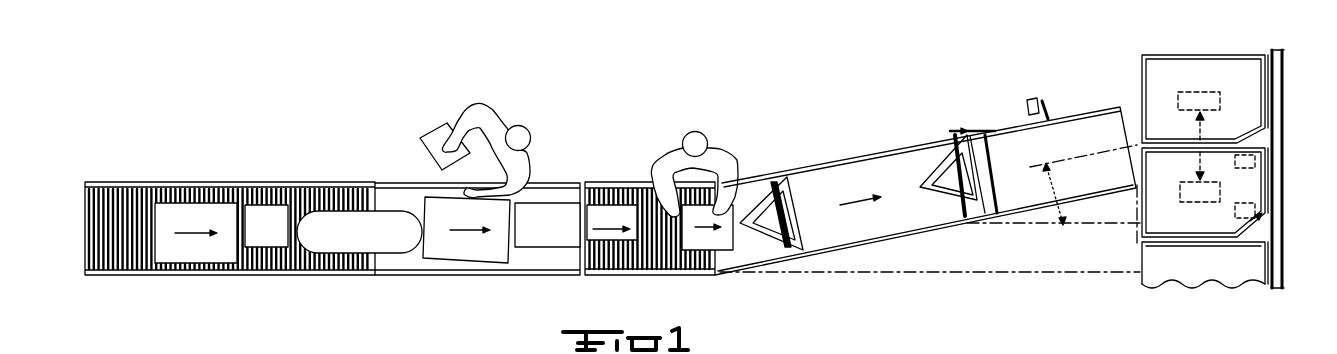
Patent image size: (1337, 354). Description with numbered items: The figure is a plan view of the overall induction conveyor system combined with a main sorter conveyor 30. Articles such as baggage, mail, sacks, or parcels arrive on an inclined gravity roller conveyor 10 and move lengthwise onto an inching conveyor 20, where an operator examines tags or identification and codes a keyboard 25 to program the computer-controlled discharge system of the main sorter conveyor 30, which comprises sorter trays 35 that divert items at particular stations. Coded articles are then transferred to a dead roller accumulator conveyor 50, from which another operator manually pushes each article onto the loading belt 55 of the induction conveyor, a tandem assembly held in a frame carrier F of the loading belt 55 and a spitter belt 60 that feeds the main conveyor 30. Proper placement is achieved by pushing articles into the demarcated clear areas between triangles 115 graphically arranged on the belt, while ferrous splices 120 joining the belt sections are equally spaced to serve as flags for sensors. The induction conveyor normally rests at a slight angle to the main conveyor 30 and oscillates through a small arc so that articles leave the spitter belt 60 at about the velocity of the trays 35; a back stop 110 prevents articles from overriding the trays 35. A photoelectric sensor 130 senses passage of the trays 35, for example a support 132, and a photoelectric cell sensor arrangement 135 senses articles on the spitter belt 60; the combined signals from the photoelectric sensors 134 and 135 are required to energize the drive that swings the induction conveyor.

The inclined gravity roller conveyor 10 is at (296, 182).
The inching conveyor 20 is at (415, 182).
The keyboard 25 is at (429, 132).
The dead roller accumulator conveyor 50 is at (637, 182).
The loading belt 55 is at (902, 215).
The spitter belt 60 is at (1105, 177).
The triangles 115 is at (794, 206).
The splices 120 is at (776, 182).
The photoelectric cell sensor arrangement 135 is at (1027, 113).
The frame carrier F is at (1080, 108).
The main sorter conveyor 30 is at (1318, 163).
The photoelectric sensor 134 is at (1277, 146).
The back stop 110 is at (1278, 212).
The photoelectric sensor 130 is at (1280, 240).
The support 132 is at (1207, 92).
The sorter trays 35 is at (1255, 188).